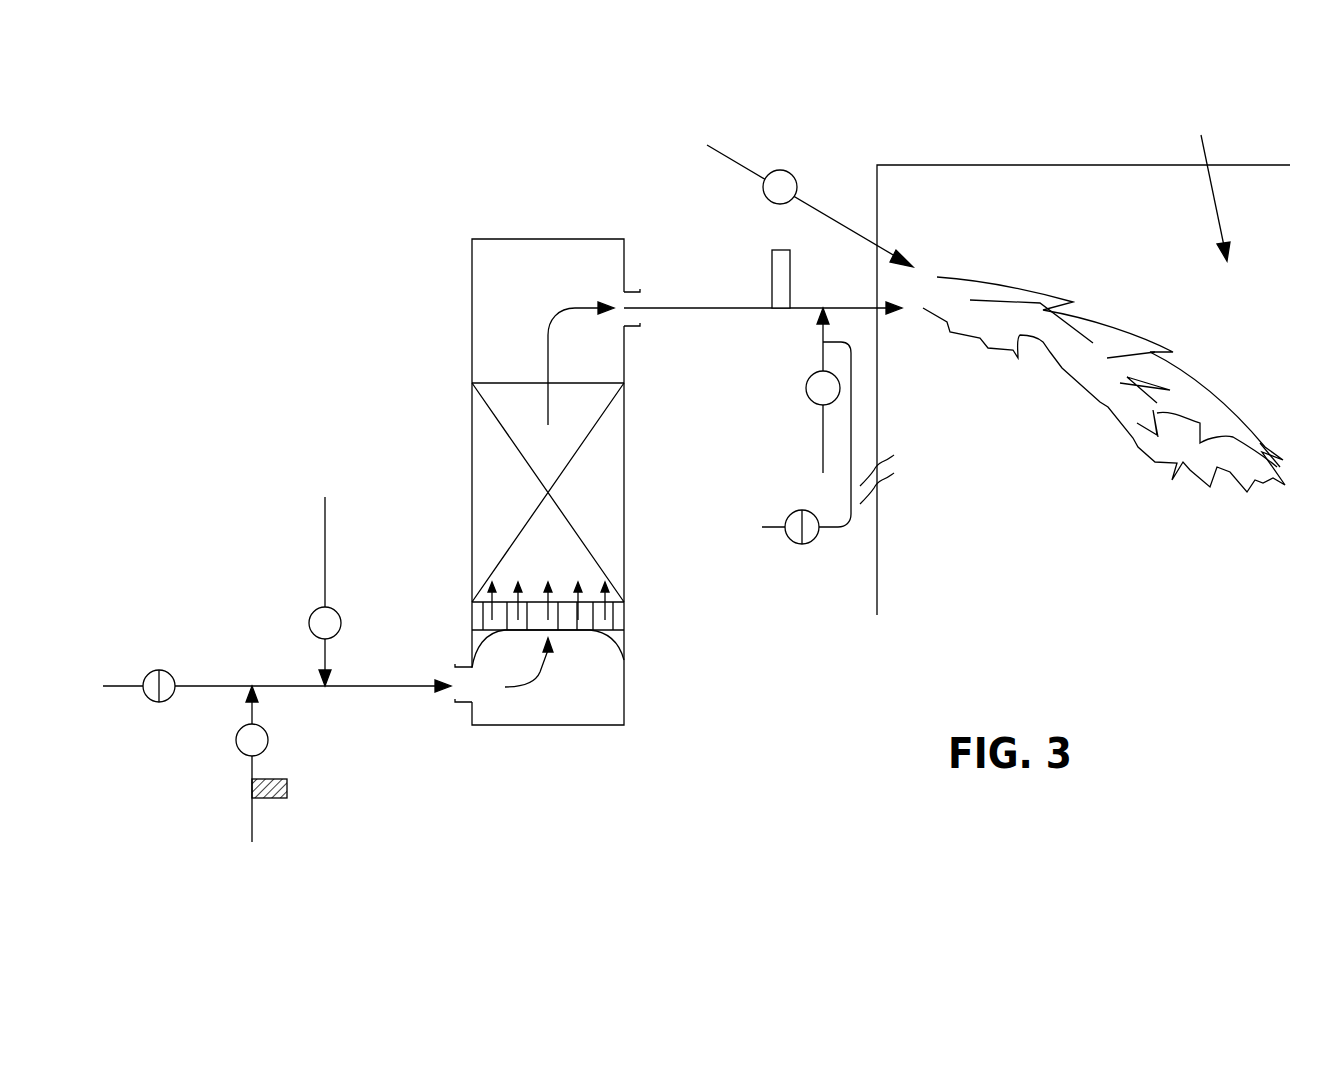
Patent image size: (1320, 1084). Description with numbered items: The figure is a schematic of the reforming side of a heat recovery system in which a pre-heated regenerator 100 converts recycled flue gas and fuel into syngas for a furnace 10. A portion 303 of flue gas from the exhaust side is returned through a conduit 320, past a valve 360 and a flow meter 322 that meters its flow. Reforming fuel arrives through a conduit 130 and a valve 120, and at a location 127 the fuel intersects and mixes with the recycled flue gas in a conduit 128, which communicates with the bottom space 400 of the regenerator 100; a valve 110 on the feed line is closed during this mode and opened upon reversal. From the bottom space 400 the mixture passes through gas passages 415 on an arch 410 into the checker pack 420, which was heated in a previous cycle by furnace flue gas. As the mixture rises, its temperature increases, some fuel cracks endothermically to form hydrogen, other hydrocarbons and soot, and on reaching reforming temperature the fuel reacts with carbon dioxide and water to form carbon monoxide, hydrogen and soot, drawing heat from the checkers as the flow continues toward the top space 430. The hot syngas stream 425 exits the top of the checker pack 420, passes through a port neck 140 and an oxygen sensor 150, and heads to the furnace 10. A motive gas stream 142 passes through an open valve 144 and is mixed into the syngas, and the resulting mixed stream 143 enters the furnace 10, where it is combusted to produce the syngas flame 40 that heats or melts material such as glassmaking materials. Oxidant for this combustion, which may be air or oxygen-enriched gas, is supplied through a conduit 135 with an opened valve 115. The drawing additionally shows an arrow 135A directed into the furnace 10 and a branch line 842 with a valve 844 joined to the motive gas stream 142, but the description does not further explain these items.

The furnace 10 is at (1072, 165).
The syngas flame 40 is at (1140, 338).
The regenerator 100 is at (543, 239).
The valve 110 is at (167, 672).
The valve 115 is at (768, 178).
The valve 120 is at (341, 623).
The location 127 is at (325, 690).
The conduit 128 is at (407, 690).
The conduit 130 is at (327, 557).
The conduit 135 is at (733, 166).
The secondary air stream 135A is at (1210, 178).
The port neck 140 is at (737, 310).
The motive gas stream 142 is at (819, 457).
The mixed stream 143 is at (843, 307).
The valve 144 is at (806, 390).
The oxygen sensor 150 is at (771, 266).
The portion of the flue gas 303 is at (252, 842).
The conduit 320 is at (250, 802).
The flow meter 322 is at (288, 786).
The valve 360 is at (236, 741).
The bottom space 400 is at (592, 706).
The arch 410 is at (620, 618).
The gas passages 415 is at (574, 622).
The checker pack 420 is at (605, 484).
The syngas stream 425 is at (550, 326).
The top space 430 is at (522, 274).
The bypass line 842 is at (828, 530).
The bypass valve 844 is at (786, 536).